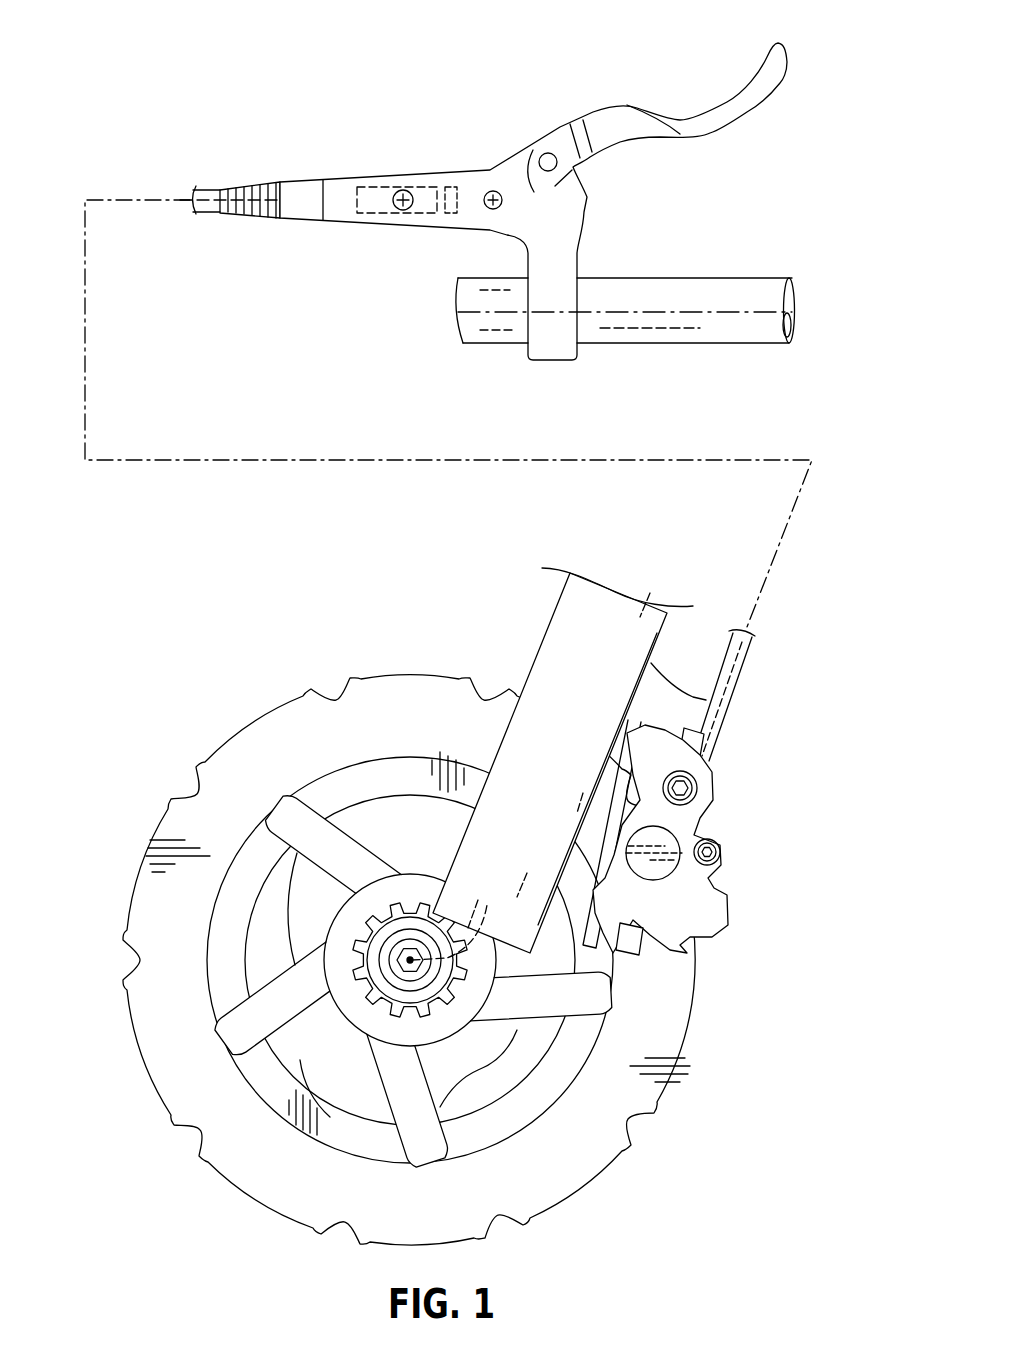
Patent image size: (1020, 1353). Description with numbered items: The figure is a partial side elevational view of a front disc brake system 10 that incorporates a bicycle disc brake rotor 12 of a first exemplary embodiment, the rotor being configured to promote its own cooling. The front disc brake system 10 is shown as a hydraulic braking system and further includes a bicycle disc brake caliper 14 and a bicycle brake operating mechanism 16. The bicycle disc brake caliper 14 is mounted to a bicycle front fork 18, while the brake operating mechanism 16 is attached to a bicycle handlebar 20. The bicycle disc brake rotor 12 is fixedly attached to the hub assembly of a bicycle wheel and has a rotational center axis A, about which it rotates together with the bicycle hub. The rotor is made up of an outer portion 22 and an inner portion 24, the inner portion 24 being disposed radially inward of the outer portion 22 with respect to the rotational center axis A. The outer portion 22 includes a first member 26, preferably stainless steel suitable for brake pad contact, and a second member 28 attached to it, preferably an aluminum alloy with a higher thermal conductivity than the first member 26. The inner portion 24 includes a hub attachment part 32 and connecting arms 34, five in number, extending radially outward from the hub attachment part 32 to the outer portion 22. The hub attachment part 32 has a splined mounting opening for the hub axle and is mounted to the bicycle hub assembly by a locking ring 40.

The front disc brake system 10 is at (193, 554).
The bicycle disc brake rotor 12 is at (392, 926).
The bicycle disc brake caliper 14 is at (710, 886).
The bicycle brake operating mechanism 16 is at (518, 144).
The bicycle front fork 18 is at (547, 630).
The bicycle handlebar 20 is at (690, 278).
The outer portion 22 is at (212, 748).
The inner portion 24 is at (297, 1027).
The first member 26 is at (170, 1012).
The second member 28 is at (215, 933).
The hub attachment part 32 is at (415, 873).
The connecting arm 34 is at (517, 1030).
The locking ring 40 is at (405, 1025).
The rotational center axis A is at (453, 919).